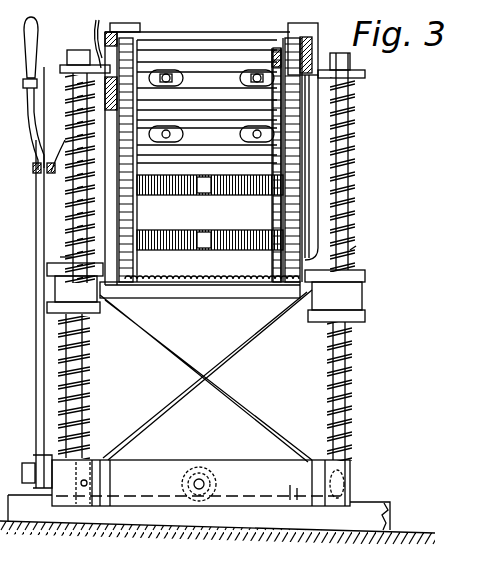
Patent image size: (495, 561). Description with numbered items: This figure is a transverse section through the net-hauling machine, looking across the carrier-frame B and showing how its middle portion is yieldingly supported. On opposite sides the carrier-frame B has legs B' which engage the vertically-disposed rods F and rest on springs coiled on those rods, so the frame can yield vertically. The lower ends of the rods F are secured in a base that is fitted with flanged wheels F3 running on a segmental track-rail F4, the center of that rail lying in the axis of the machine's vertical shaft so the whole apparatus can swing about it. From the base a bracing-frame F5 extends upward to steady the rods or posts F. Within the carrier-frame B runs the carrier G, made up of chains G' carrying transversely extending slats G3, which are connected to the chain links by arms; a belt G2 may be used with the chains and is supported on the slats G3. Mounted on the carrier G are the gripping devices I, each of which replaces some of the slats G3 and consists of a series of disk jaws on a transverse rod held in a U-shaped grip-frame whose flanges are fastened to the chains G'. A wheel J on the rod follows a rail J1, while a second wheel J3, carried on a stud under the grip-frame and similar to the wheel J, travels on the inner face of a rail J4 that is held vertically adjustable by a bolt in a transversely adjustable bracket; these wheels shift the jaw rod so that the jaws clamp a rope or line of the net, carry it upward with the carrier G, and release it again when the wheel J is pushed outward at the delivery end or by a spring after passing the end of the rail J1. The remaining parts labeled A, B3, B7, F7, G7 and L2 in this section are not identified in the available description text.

The base A is at (435, 533).
The carrier-frame B is at (208, 54).
The legs B' is at (225, 71).
The rod B3 is at (108, 35).
The hand lever B7 is at (40, 70).
The vertically-disposed rods F is at (352, 118).
The flanged wheels F3 is at (88, 462).
The segmental track-rail F4 is at (392, 512).
The bracing-frame F5 is at (232, 350).
The screw thread F7 is at (60, 257).
The carrier G is at (202, 154).
The chains G' is at (75, 288).
The belt G2 is at (200, 275).
The slats G3 is at (292, 300).
The frame head G7 is at (303, 24).
The gripping devices I is at (210, 225).
The wheel J is at (255, 70).
The rail J1 is at (278, 46).
The wheel J3 is at (180, 72).
The rail J4 is at (170, 70).
The lever L2 is at (494, 330).